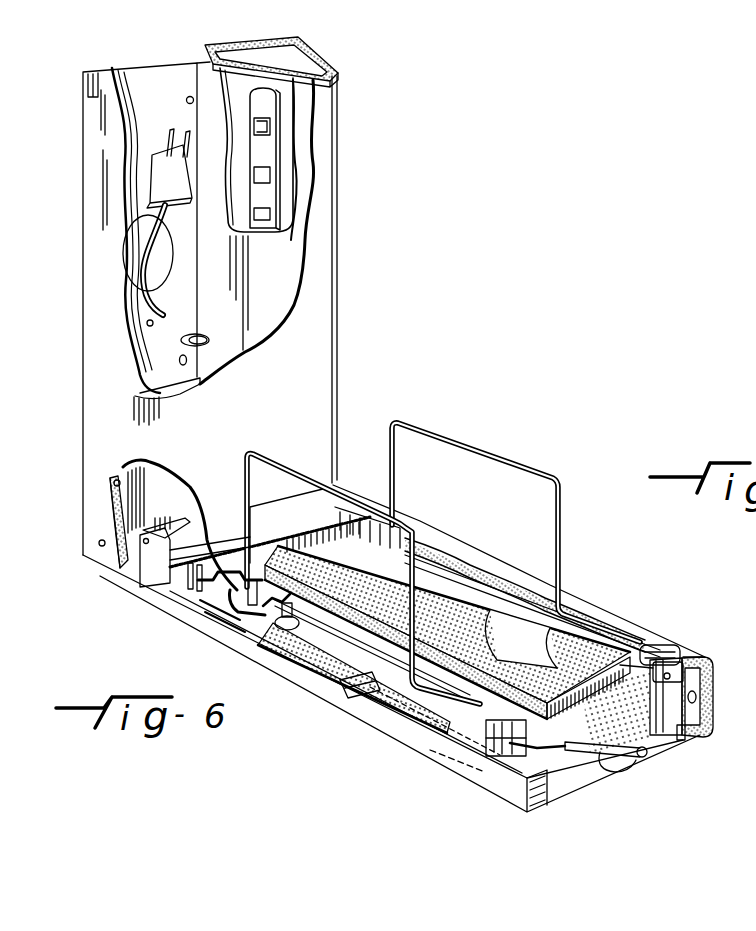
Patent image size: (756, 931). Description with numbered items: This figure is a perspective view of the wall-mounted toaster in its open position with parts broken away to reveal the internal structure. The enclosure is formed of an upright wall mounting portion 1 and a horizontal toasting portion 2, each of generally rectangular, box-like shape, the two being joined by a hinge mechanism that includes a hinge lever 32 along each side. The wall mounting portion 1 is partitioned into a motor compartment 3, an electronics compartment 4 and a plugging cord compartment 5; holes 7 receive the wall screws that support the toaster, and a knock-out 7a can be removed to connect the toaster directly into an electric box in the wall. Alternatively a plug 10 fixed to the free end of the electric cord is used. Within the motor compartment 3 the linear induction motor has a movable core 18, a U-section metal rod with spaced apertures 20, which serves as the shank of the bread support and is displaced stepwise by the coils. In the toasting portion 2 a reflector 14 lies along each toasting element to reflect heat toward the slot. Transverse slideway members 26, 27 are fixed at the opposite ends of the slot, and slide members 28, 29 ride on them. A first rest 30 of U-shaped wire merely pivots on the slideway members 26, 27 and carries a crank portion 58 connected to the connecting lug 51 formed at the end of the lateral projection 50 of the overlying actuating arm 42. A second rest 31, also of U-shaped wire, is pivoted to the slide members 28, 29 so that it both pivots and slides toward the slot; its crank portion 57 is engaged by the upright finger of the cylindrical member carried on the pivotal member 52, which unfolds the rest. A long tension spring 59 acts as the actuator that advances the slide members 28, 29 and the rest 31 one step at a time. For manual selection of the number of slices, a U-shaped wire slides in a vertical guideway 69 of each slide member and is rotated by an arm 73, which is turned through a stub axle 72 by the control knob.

The wall mounting portion 1 is at (330, 286).
The toasting portion 2 is at (583, 604).
The motor compartment 3 is at (293, 256).
The electronics compartment 4 is at (167, 385).
The plugging cord compartment 5 is at (159, 308).
The holes 7 is at (188, 96).
The knock-out 7a is at (137, 250).
The plug 10 is at (168, 178).
The reflector 14 is at (447, 540).
The movable core 18 is at (294, 162).
The apertures 20 is at (270, 131).
The slideway member 26 is at (228, 612).
The slideway member 27 is at (664, 651).
The slide member 28 is at (215, 608).
The slide member 29 is at (470, 756).
The first rest 30 is at (432, 431).
The second rest 31 is at (286, 462).
The hinge lever 32 is at (120, 568).
The overlying actuating arm 42 is at (333, 700).
The lateral projection 50 is at (560, 776).
The connecting lug 51 is at (715, 668).
The pivotal member 52 is at (243, 650).
The crank portion 57 is at (250, 640).
The crank portion 58 is at (698, 660).
The tension spring 59 is at (250, 572).
The vertical guideway 69 is at (500, 762).
The stub axle 72 is at (641, 755).
The arm 73 is at (622, 770).